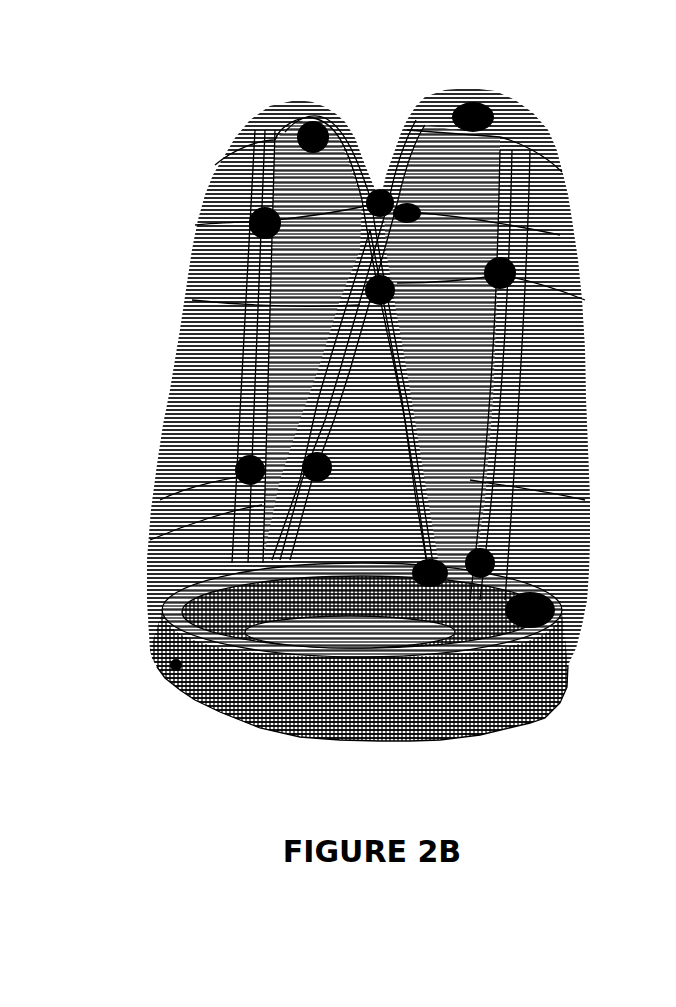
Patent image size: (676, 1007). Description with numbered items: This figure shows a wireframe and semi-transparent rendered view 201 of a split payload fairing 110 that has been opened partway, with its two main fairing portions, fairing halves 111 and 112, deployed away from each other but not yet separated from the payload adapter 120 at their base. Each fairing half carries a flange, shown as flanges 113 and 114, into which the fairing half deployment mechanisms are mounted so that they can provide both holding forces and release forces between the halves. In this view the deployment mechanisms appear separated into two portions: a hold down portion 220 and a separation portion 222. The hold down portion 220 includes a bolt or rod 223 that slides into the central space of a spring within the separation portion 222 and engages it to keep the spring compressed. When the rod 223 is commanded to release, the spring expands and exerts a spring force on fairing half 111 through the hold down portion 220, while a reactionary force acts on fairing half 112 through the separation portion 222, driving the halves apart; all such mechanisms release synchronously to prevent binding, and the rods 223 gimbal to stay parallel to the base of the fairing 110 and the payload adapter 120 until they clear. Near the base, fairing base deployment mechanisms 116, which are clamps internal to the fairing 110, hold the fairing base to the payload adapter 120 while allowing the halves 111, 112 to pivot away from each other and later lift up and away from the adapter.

The wireframe and semi-transparent rendered view 201 is at (182, 160).
The fairing 110 is at (167, 390).
The first fairing half 111 is at (185, 463).
The second fairing half 112 is at (545, 343).
The flange of fairing half 113 is at (500, 158).
The flange of fairing half 114 is at (272, 270).
The fairing base deployment mechanism 116 is at (176, 668).
The payload adapter 120 is at (220, 714).
The hold down portion 220 is at (313, 125).
The separation portion 222 is at (452, 112).
The rod 223 is at (356, 130).